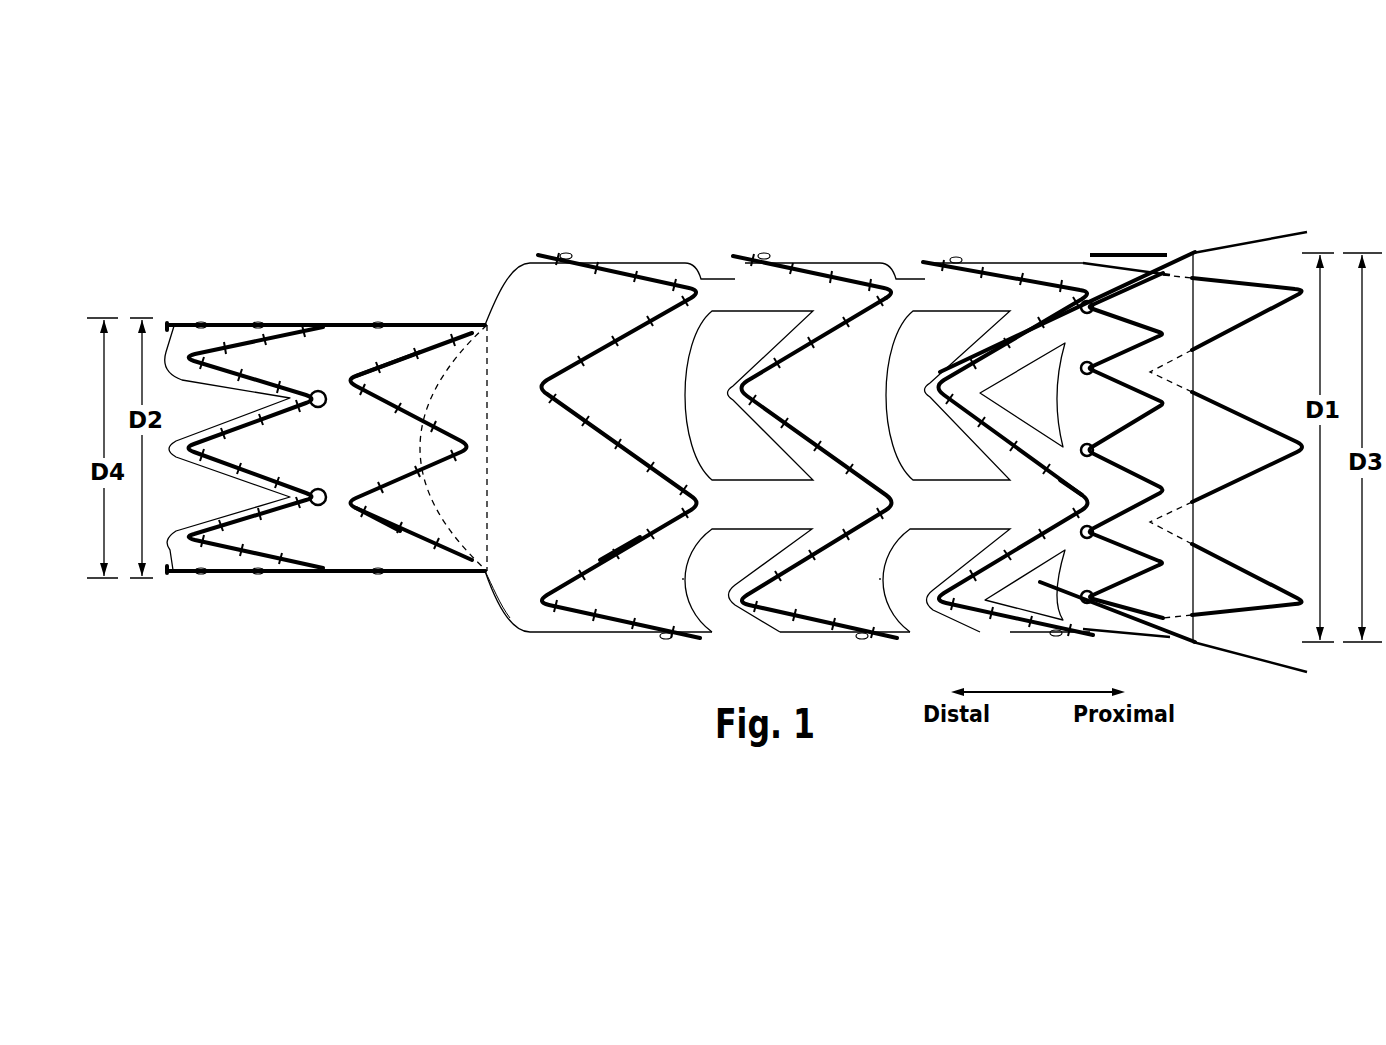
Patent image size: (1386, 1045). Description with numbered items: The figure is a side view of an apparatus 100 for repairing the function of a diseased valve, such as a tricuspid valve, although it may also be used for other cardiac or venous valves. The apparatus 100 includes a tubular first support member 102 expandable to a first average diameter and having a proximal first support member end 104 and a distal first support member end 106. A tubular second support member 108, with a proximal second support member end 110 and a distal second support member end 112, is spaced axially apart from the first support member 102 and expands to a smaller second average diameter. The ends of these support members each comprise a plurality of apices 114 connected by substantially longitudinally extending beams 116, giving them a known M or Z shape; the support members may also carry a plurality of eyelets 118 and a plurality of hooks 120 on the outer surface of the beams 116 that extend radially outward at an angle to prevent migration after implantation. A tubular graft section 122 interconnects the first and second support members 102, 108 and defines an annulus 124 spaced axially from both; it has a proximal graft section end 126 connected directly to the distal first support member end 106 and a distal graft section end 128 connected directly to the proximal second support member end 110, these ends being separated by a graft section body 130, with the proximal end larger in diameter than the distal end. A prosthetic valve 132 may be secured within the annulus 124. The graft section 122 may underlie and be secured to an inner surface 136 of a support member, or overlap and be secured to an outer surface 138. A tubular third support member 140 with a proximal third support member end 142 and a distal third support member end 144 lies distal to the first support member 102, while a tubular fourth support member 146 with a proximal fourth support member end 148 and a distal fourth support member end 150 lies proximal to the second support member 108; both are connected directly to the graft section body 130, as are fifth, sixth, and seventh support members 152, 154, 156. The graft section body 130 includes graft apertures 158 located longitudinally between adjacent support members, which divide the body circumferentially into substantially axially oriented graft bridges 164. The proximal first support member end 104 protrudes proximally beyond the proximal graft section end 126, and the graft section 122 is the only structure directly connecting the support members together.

The apparatus 100 is at (412, 738).
The first support member 102 is at (1121, 122).
The proximal first support member end 104 is at (1277, 195).
The distal first support member end 106 is at (1130, 240).
The second support member 108 is at (258, 185).
The proximal second support member end 110 is at (322, 595).
The distal second support member end 112 is at (160, 595).
The apices 114 is at (180, 325).
The beams 116 is at (237, 335).
The eyelets 118 is at (320, 405).
The hooks 120 is at (843, 317).
The tubular graft section 122 is at (561, 190).
The annulus 124 is at (490, 320).
The proximal graft section end 126 is at (1091, 242).
The distal graft section end 128 is at (238, 620).
The graft section body 130 is at (646, 392).
The prosthetic valve 132 is at (500, 500).
The inner surface 136 is at (270, 475).
The outer surface 138 is at (270, 422).
The third support member 140 is at (820, 150).
The proximal third support member end 142 is at (904, 250).
The distal third support member end 144 is at (705, 240).
The fourth support member 146 is at (422, 170).
The proximal fourth support member end 148 is at (490, 525).
The distal fourth support member end 150 is at (380, 545).
The fifth support member 152 is at (672, 545).
The sixth support member 154 is at (1057, 490).
The seventh support member 156 is at (1118, 345).
The graft aperture 158 is at (672, 392).
The graft bridges 164 is at (966, 306).